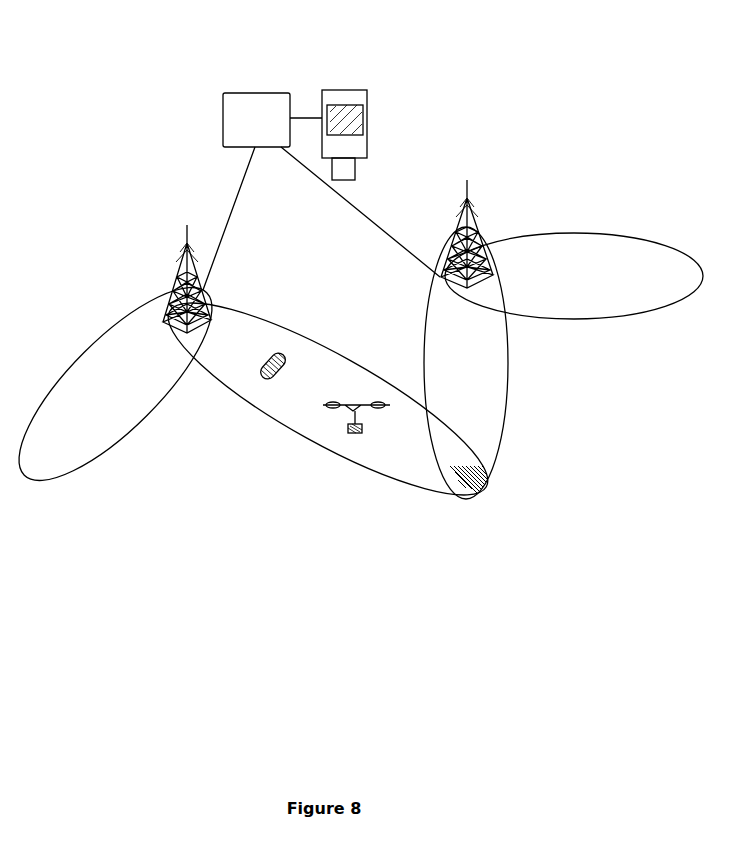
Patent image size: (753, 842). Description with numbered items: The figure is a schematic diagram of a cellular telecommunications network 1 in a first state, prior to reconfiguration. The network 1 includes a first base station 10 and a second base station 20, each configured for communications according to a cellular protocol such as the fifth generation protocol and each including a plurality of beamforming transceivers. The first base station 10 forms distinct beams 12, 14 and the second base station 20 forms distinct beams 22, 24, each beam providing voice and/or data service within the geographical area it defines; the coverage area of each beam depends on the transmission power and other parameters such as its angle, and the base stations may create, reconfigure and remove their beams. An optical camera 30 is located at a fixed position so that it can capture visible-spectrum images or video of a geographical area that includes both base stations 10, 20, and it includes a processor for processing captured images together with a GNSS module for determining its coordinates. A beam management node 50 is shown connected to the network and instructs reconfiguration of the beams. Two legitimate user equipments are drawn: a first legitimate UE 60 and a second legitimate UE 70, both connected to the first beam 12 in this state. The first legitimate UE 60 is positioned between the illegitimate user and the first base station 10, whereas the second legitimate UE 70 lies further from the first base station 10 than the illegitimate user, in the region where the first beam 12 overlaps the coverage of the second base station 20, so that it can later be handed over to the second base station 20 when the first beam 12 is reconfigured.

The cellular telecommunications network 1 is at (61, 35).
The first base station 10 is at (183, 259).
The first beam 12 is at (275, 317).
The beam 14 is at (122, 319).
The second base station 20 is at (463, 216).
The beam 22 is at (545, 233).
The beam 24 is at (511, 353).
The optical camera 30 is at (364, 129).
The beam management node 50 is at (321, 191).
The first legitimate UE 60 is at (290, 356).
The second legitimate UE 70 is at (496, 463).